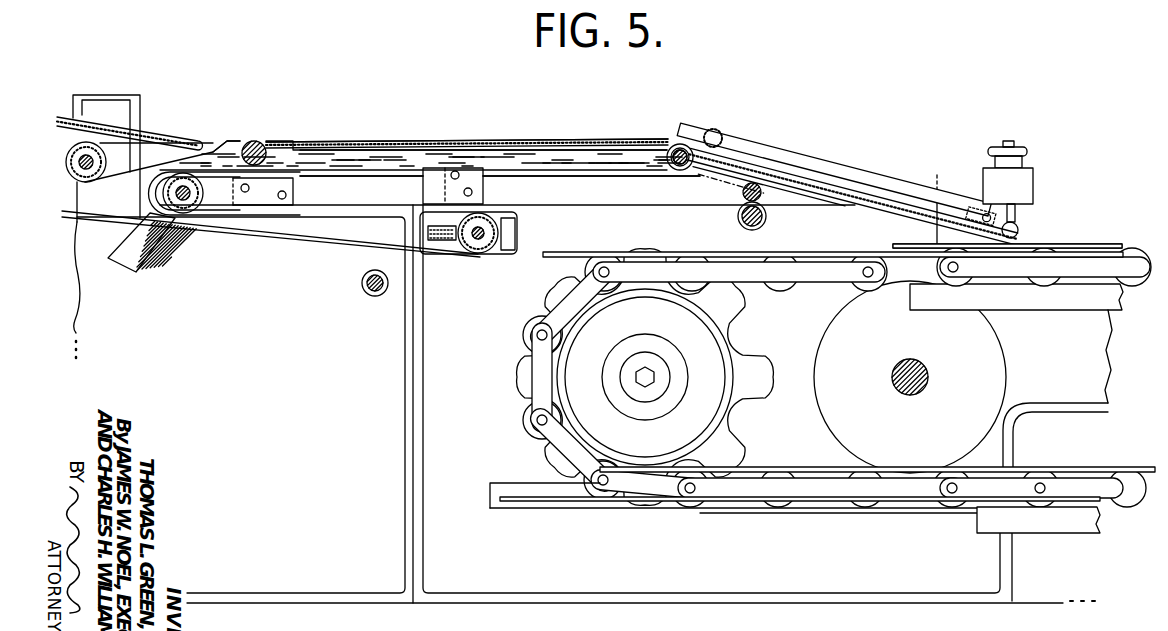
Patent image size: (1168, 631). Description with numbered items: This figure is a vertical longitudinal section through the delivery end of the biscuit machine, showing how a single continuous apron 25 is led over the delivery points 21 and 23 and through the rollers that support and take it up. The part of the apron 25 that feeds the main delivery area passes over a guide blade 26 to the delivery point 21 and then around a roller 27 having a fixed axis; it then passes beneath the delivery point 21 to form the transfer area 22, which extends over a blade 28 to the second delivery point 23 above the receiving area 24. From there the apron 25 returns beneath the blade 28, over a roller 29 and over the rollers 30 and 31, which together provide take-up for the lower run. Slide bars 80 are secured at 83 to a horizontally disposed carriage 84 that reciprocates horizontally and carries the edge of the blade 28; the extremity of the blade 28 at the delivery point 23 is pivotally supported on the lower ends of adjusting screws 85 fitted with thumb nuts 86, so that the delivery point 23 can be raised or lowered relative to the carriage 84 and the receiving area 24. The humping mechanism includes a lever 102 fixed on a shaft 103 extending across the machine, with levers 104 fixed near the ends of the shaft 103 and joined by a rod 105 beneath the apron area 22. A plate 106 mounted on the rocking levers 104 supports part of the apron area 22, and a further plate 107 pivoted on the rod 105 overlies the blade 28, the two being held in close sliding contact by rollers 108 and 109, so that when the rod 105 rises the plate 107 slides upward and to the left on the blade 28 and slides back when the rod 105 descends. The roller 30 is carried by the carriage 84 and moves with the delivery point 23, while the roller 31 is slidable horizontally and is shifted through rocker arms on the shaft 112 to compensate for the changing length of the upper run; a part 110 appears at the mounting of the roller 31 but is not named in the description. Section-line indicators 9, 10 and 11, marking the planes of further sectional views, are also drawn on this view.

The section line 9- 9 is at (306, 92).
The section line 10- 10 is at (740, 95).
The section line 11- 11 is at (1010, 186).
The delivery point 21 is at (200, 136).
The transfer area 22 is at (525, 138).
The second delivery point 23 is at (1021, 240).
The receiving area 24 is at (1097, 245).
The apron 25 is at (74, 114).
The guide blade 26 is at (86, 130).
The roller 27 is at (75, 178).
The blade 28 is at (803, 185).
The roller 29 is at (744, 192).
The apron roller 30 is at (163, 193).
The roller 31 is at (482, 241).
The slide bars 80 is at (140, 249).
The securing point 83 is at (262, 198).
The carriage 84 is at (362, 193).
The adjusting screws 85 is at (1020, 216).
The thumb nuts 86 is at (1021, 146).
The lever 102 is at (218, 155).
The shaft 103 is at (253, 140).
The levers 104 is at (593, 160).
The rod 105 is at (683, 165).
The plate 106 is at (470, 141).
The plate 107 is at (685, 143).
The rollers 108 is at (721, 135).
The rollers 109 is at (983, 210).
The adjusting slot 110 is at (447, 241).
The shaft 112 is at (380, 292).